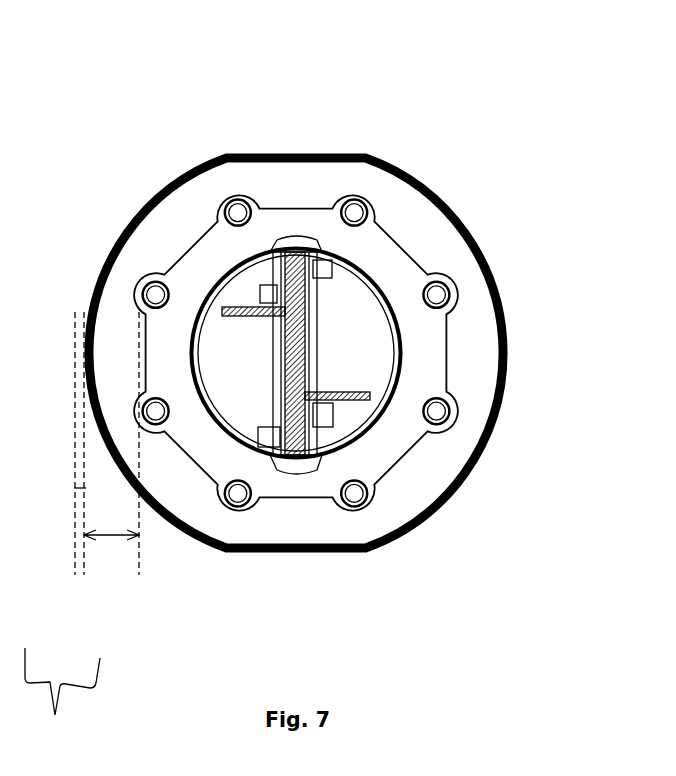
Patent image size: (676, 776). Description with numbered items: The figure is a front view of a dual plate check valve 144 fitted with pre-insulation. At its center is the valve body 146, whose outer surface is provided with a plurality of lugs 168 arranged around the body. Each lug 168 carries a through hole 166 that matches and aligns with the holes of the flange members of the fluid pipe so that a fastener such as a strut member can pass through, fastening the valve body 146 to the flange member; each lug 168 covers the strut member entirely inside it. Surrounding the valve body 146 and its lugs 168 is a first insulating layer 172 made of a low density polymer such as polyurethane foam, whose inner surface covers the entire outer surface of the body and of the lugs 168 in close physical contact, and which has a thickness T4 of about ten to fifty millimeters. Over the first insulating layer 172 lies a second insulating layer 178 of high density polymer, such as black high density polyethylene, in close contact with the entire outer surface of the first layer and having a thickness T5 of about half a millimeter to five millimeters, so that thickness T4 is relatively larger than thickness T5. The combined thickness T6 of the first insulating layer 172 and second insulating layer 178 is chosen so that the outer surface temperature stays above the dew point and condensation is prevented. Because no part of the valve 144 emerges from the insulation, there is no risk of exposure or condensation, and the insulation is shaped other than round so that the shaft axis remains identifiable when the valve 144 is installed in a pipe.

The dual plate check valve 144 is at (483, 98).
The valve body 146 is at (263, 223).
The through hole 166 is at (232, 211).
The lugs 168 is at (367, 204).
The first insulating layer 172 is at (478, 323).
The second insulating layer 178 is at (458, 473).
The thickness of first insulating layer T4 is at (118, 537).
The thickness of second insulating layer T5 is at (80, 492).
The combined thickness T6 is at (62, 699).